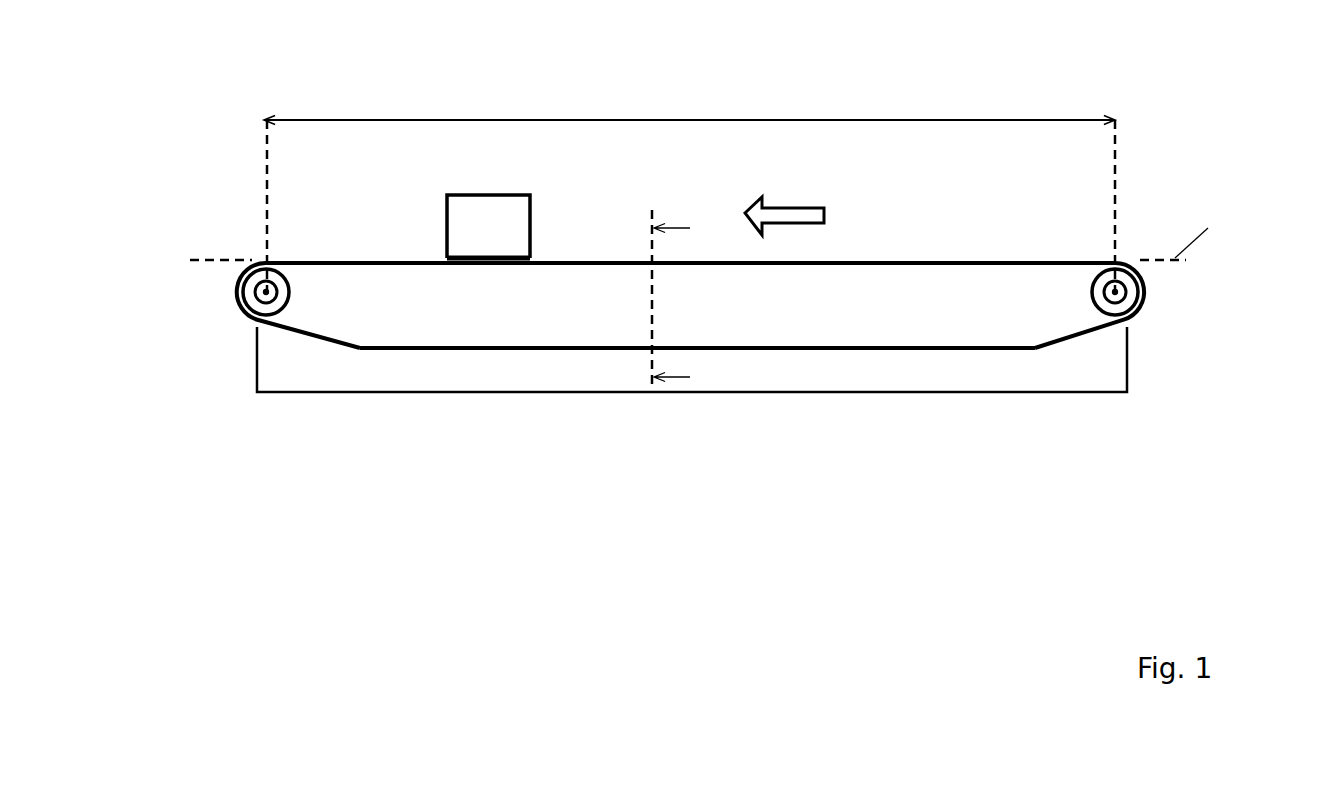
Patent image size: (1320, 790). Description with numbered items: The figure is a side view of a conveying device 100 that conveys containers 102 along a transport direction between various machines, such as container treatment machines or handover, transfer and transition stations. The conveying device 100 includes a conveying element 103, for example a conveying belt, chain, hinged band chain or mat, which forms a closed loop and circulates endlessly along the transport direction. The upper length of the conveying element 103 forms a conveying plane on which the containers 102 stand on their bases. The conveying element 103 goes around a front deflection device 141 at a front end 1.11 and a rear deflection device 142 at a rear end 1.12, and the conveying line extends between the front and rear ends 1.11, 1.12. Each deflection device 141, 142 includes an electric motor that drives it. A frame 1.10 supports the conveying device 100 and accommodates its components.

The conveying device 100 is at (212, 107).
The containers 102 is at (462, 195).
The conveying element 103 is at (1001, 240).
The front deflection device 141 is at (246, 293).
The rear deflection device 142 is at (1132, 297).
The frame 1.10 is at (282, 392).
The front end 1.11 is at (196, 338).
The rear end 1.12 is at (1177, 323).